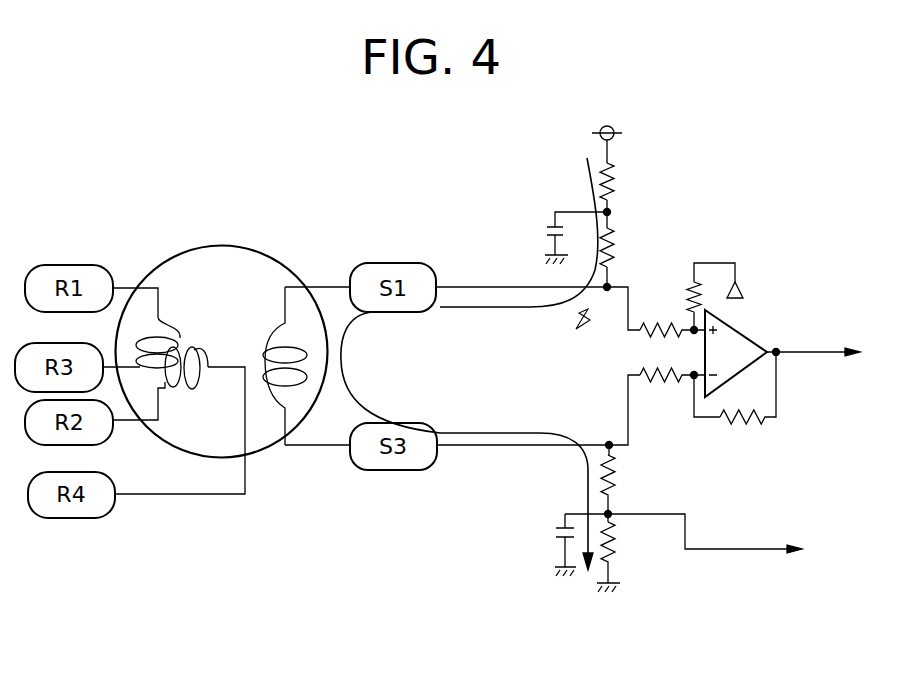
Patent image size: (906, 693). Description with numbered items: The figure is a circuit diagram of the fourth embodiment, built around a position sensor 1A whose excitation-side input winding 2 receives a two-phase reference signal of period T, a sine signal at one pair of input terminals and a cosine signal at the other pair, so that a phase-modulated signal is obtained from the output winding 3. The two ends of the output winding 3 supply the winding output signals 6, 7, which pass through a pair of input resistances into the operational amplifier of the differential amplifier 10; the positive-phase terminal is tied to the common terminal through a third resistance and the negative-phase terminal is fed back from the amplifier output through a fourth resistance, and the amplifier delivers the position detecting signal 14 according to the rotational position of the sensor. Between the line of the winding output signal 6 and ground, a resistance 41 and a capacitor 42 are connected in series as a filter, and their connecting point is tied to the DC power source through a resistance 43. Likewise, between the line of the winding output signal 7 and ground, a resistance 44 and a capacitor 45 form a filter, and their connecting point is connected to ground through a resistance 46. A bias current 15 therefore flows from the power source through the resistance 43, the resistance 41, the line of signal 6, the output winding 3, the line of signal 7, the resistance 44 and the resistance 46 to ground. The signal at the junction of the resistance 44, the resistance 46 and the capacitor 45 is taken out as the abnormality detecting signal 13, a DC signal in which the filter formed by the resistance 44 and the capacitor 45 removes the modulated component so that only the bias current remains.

The position sensor 1A is at (250, 248).
The input winding 2 is at (142, 333).
The output winding 3 is at (270, 398).
The winding output signal 6 is at (469, 286).
The winding output signal 7 is at (478, 447).
The differential amplifier 10 is at (723, 392).
The abnormality detecting signal 13 is at (738, 551).
The position detecting signal 14 is at (815, 355).
The bias current 15 is at (590, 190).
The resistance 41 is at (617, 255).
The capacitor 42 is at (548, 245).
The resistance 43 is at (617, 190).
The resistance 44 is at (618, 480).
The capacitor 45 is at (556, 545).
The resistance 46 is at (618, 545).